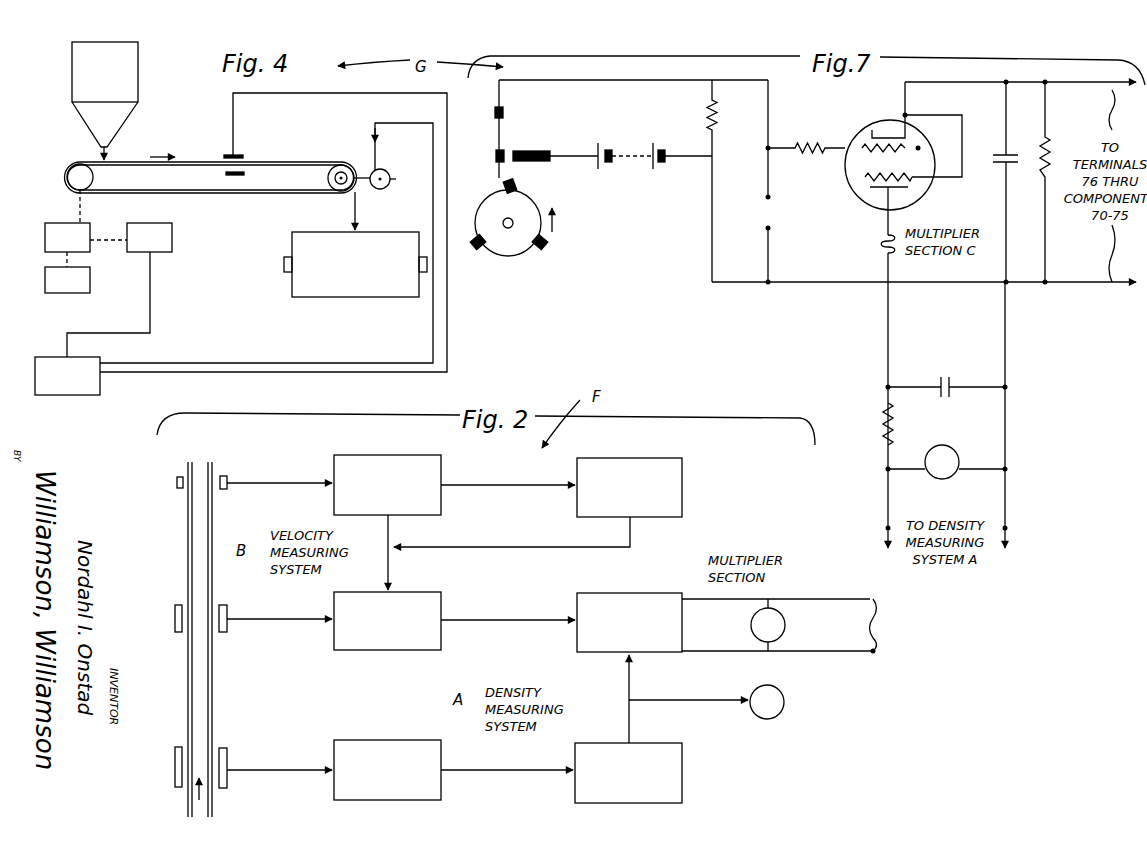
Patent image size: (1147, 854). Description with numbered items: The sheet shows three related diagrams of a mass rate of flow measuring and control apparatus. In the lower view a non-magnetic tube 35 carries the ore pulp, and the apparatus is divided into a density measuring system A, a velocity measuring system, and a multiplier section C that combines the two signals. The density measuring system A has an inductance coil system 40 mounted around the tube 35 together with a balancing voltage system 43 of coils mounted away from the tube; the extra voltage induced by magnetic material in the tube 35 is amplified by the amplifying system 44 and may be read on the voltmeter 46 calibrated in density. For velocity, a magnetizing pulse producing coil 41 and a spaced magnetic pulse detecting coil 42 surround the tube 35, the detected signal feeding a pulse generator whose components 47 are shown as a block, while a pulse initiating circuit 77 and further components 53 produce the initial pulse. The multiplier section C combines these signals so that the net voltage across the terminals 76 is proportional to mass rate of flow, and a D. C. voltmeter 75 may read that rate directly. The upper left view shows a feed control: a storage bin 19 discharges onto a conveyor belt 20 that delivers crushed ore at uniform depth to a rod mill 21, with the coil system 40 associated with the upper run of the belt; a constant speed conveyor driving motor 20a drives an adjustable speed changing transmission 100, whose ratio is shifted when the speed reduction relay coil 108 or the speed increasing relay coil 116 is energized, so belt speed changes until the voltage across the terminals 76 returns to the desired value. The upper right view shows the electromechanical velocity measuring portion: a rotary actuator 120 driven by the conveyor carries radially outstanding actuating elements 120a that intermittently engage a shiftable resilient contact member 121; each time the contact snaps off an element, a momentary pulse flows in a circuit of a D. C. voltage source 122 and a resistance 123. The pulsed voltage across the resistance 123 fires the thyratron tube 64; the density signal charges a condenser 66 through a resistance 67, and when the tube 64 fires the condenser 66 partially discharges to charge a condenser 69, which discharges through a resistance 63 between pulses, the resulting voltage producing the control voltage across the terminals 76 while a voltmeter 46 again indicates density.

In FIG. 4, the storage bin 19 is at (138, 93).
In FIG. 4, the conveyor belt 20 is at (190, 162).
In FIG. 4, the constant speed conveyor driving motor 20a is at (90, 284).
In FIG. 4, the rod mill 21 is at (352, 298).
In FIG. 2, the non-magnetic tube 35 is at (212, 698).
In FIG. 4, the inductance coil system 40 is at (243, 156).
In FIG. 2, the inductance coil system 40 is at (172, 783).
In FIG. 2, the magnetizing pulse producing coil 41 is at (228, 612).
In FIG. 2, the magnetic pulse detecting coil 42 is at (228, 475).
In FIG. 2, the balancing voltage system 43 is at (441, 800).
In FIG. 2, the amplifying system 44 is at (682, 782).
In FIG. 7, the voltmeter 46 is at (950, 447).
In FIG. 2, the voltmeter 46 is at (784, 706).
In FIG. 2, the velocity measuring components 47-52, 59, 60 47 is at (418, 590).
In FIG. 2, the velocity measuring components 53-58 53 is at (370, 460).
In FIG. 7, the resistance 63 is at (1040, 140).
In FIG. 7, the thyratron tube 64 is at (880, 108).
In FIG. 7, the condenser 66 is at (950, 385).
In FIG. 7, the resistance 67 is at (893, 425).
In FIG. 7, the condenser 69 is at (1000, 152).
In FIG. 2, the D. C. voltmeter 75 is at (782, 635).
In FIG. 2, the terminals 76 is at (890, 625).
In FIG. 2, the pulse initiating circuit 77 is at (682, 480).
In FIG. 4, the adjustable speed changing transmission 100 is at (86, 238).
In FIG. 4, the coil 108 is at (160, 232).
In FIG. 4, the speed increasing relay coil 116 is at (172, 245).
In FIG. 4, the rotary actuator 120 is at (386, 168).
In FIG. 7, the rotary actuator 120 is at (522, 246).
In FIG. 4, the actuating elements 120a is at (384, 190).
In FIG. 7, the actuating elements 120a is at (516, 180).
In FIG. 4, the shiftable resilient contact member 121 is at (375, 150).
In FIG. 7, the shiftable resilient contact member 121 is at (499, 138).
In FIG. 7, the source of D. C. voltage 122 is at (634, 156).
In FIG. 7, the resistance 123 is at (717, 118).
In FIG. 4, the density measuring system A is at (100, 390).
In FIG. 2, the multiplier section C is at (655, 600).